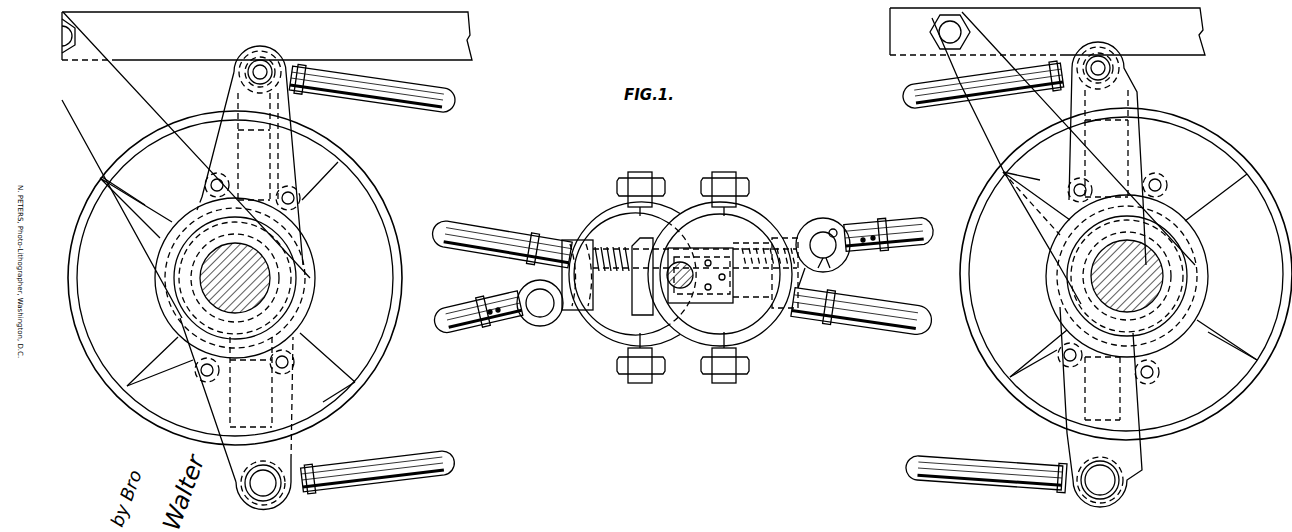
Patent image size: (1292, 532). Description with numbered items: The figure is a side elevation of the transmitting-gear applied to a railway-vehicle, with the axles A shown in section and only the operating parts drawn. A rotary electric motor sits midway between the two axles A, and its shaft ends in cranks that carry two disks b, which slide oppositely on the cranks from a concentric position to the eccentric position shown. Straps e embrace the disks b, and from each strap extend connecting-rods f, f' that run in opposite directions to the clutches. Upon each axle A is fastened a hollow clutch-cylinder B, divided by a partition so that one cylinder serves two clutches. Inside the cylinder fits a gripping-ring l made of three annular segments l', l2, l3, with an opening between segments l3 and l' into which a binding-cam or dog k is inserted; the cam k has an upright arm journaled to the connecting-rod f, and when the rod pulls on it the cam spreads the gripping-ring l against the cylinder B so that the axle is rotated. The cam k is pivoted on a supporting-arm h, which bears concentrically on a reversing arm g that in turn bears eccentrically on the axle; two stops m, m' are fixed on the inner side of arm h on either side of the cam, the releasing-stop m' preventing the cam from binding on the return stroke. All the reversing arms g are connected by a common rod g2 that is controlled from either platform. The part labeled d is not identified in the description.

The axle A is at (297, 270).
The clutch-cylinder B is at (137, 409).
The disk b is at (612, 228).
The screw nut block d is at (597, 283).
The strap e is at (650, 184).
The connecting-rod f is at (678, 277).
The connecting-rod f' is at (412, 392).
The reversing arm g is at (984, 128).
The common rod g2 is at (633, 34).
The supporting-arm h is at (229, 100).
The binding-cam k is at (290, 92).
The gripping-ring l is at (678, 262).
The annular segment l' is at (790, 303).
The annular segment l2 is at (661, 369).
The annular segment l3 is at (581, 231).
The stop m is at (684, 290).
The releasing-stop m' is at (697, 267).